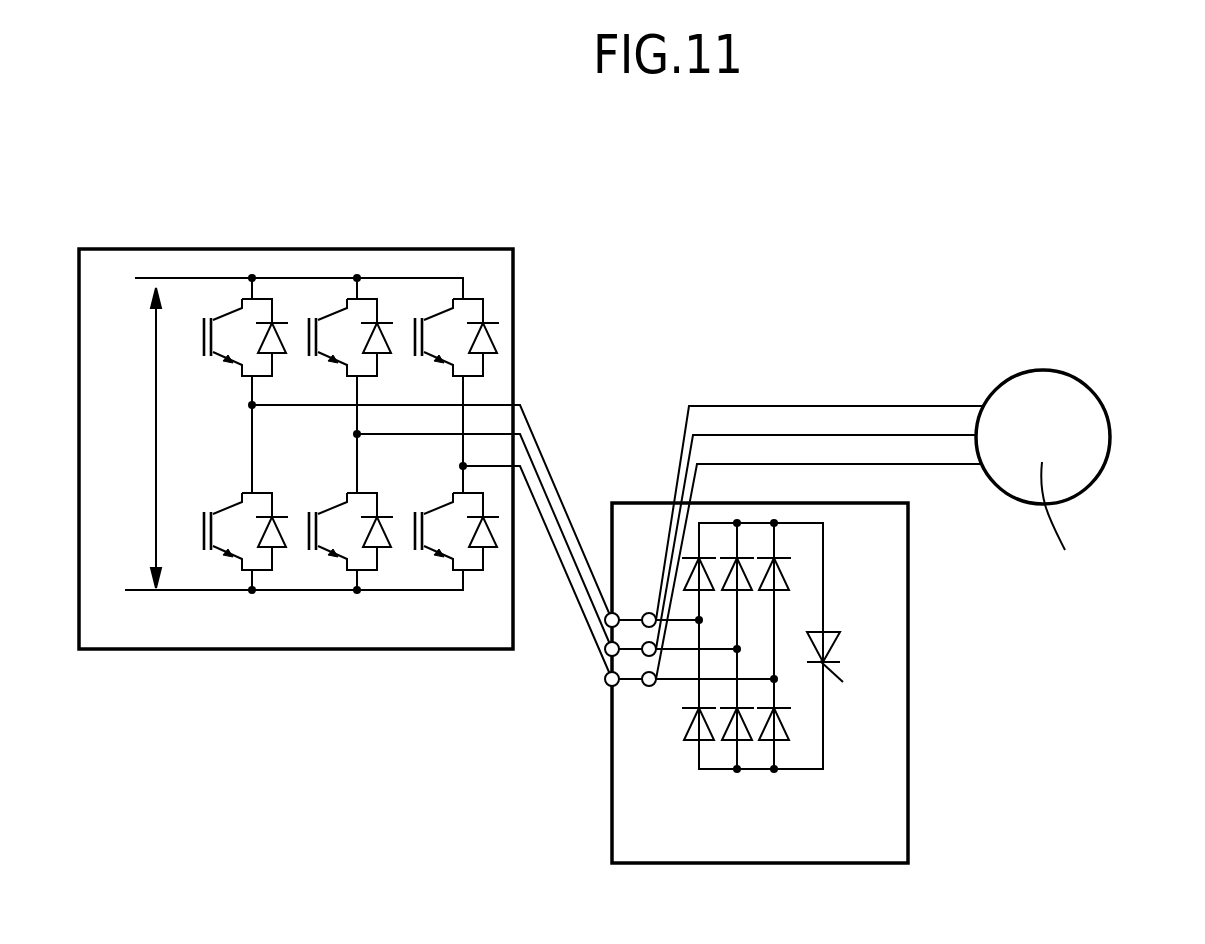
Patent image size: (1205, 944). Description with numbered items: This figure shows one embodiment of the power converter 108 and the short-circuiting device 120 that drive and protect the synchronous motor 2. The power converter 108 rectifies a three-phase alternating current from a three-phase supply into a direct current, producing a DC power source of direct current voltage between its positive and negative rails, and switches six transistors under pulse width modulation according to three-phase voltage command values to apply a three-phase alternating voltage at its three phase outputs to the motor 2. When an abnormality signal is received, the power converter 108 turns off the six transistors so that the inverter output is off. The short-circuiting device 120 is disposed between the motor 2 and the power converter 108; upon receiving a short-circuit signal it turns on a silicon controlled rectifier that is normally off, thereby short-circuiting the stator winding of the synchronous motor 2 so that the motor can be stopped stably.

The power converter 108 is at (513, 313).
The short-circuiting device 120 is at (908, 824).
The synchronous motor 2 is at (1036, 370).